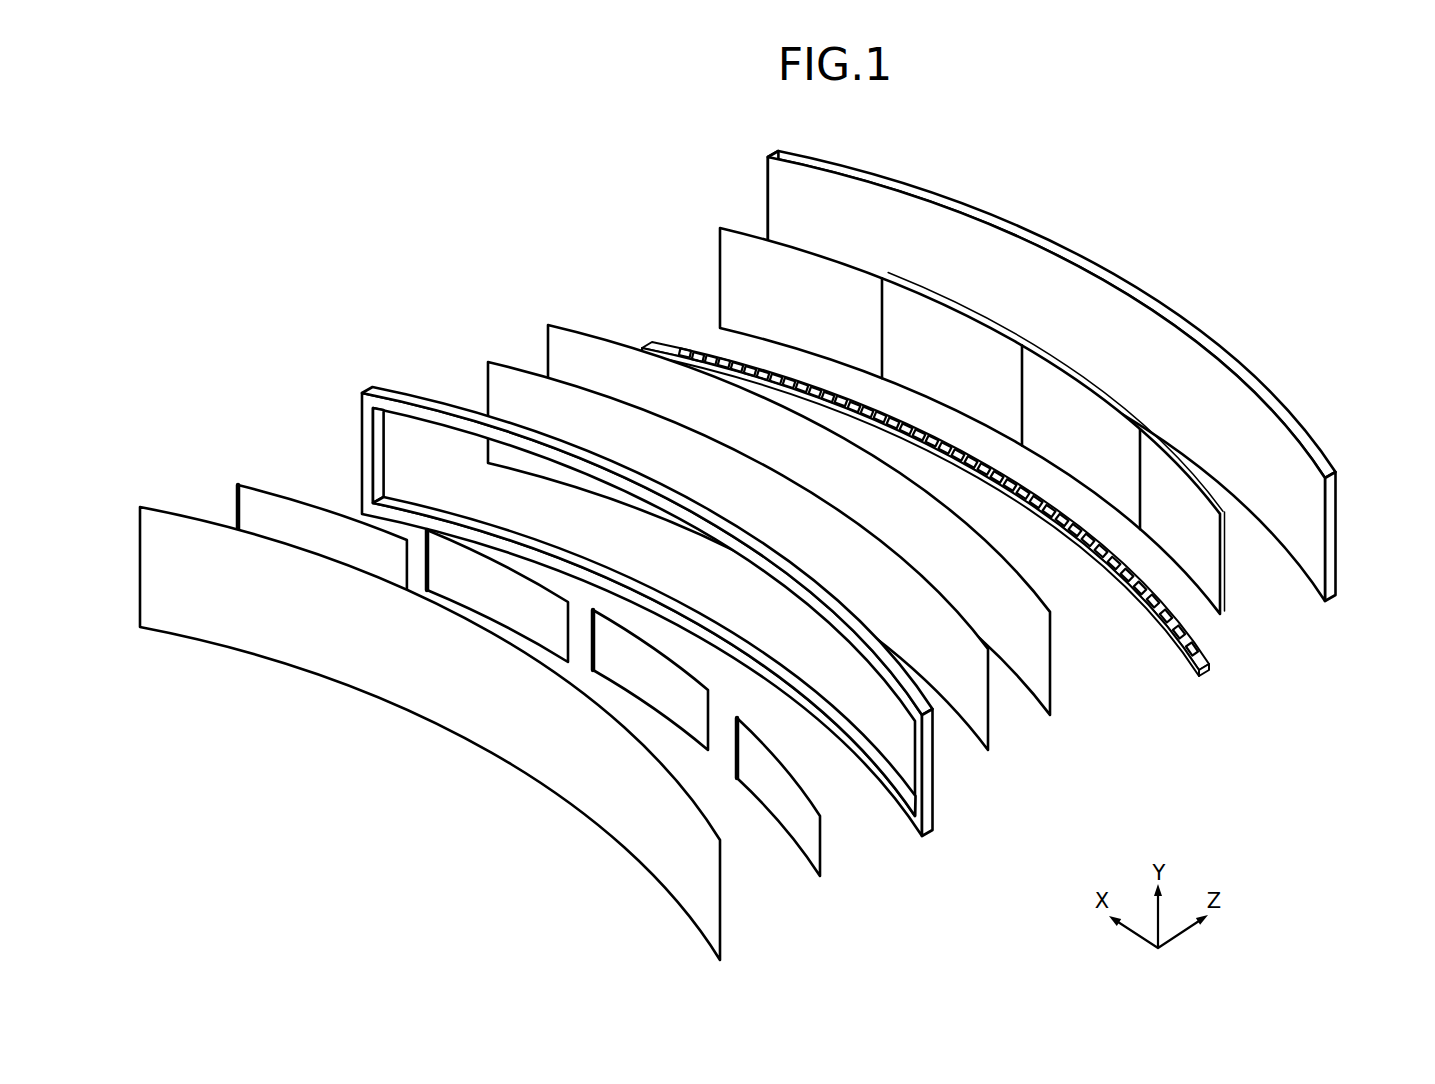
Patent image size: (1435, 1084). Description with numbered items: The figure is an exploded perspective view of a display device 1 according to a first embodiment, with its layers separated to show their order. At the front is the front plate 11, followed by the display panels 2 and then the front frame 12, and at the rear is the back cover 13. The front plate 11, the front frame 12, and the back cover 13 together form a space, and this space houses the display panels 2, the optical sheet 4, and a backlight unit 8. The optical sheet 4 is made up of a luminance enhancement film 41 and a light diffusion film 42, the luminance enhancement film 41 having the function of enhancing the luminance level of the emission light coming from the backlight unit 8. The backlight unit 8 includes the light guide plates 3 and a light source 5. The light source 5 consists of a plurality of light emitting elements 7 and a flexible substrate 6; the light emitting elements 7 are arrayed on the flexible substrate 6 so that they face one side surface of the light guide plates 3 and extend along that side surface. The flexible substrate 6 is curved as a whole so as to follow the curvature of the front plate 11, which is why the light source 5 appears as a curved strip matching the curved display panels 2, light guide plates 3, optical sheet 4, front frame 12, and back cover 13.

The display device 1 is at (346, 791).
The display panels 2 is at (810, 836).
The light guide plates 3 is at (1218, 615).
The optical sheet 4 is at (789, 589).
The luminance enhancement film 41 is at (988, 738).
The light diffusion film 42 is at (1044, 700).
The light source 5 is at (937, 563).
The flexible substrate 6 is at (1208, 652).
The light emitting elements 7 is at (1181, 650).
The backlight unit 8 is at (972, 531).
The front plate 11 is at (708, 897).
The front frame 12 is at (922, 816).
The back cover 13 is at (1333, 556).